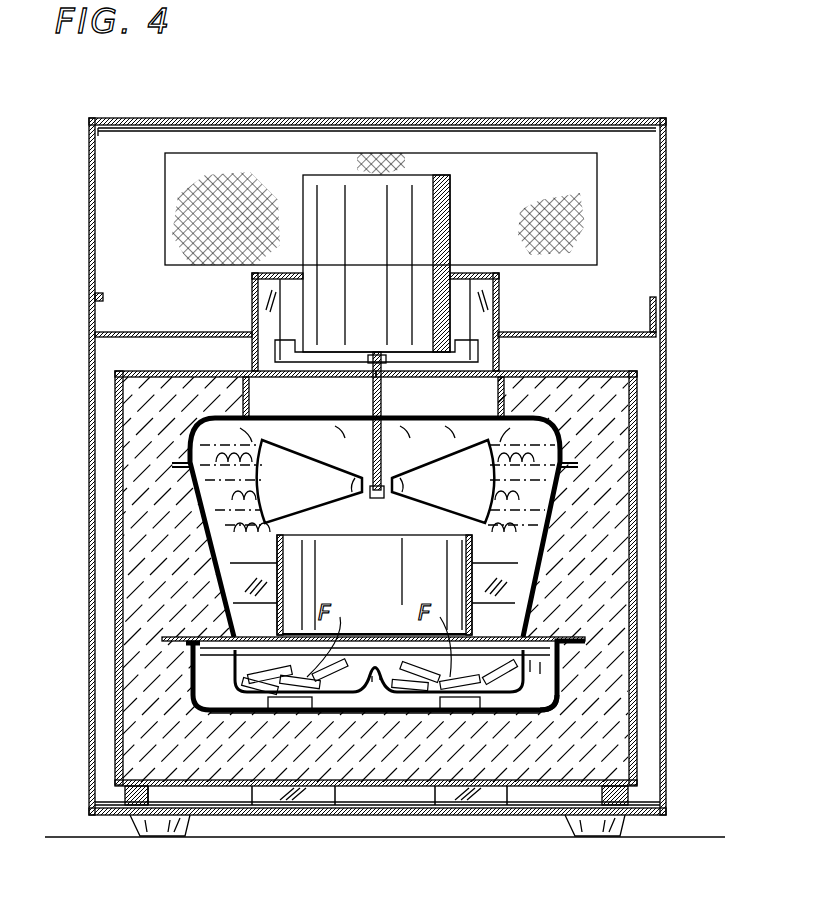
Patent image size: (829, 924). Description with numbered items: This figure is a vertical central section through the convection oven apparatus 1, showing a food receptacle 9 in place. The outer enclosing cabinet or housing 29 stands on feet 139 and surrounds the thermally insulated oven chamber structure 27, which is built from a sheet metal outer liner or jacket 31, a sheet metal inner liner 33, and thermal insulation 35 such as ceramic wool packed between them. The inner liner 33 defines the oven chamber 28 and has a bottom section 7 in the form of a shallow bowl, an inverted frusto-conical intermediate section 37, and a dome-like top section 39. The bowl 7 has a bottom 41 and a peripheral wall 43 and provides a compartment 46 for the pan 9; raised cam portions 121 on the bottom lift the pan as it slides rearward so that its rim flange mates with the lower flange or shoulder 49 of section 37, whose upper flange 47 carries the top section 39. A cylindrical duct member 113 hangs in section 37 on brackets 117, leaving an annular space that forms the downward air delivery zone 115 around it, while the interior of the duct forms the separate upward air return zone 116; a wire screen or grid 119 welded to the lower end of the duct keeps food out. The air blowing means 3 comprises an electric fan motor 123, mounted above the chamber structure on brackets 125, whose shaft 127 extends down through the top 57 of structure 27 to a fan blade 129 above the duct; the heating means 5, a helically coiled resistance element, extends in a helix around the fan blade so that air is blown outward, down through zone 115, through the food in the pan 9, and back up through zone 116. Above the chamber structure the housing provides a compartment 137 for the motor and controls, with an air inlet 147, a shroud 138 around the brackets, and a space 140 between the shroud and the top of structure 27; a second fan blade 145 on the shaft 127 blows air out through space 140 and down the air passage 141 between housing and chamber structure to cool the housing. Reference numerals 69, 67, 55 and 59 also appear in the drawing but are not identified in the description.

The apparatus 1 is at (68, 165).
The outer enclosing cabinet structure 29 is at (668, 118).
The top lid wall 69 is at (450, 118).
The housing side wall 67 is at (663, 277).
The compartment 137 is at (638, 205).
The air inlet 147 is at (563, 180).
The space 140 is at (170, 338).
The shroud 138 is at (608, 325).
The means for blowing air 3 is at (455, 172).
The electric fan motor 123 is at (452, 205).
The brackets 125 is at (247, 272).
The fan blade 145 is at (478, 345).
The thermally insulated oven chamber structure 27 is at (120, 367).
The top 57 is at (640, 378).
The jacket side walls 55 is at (123, 728).
The air passage 141 is at (640, 447).
The top section 39 is at (192, 438).
The intermediate section 37 is at (222, 546).
The inner liner 33 is at (550, 527).
The means for heating the air 5 is at (312, 448).
The upper flange 47 is at (175, 465).
The chamber 28 is at (213, 503).
The second zone 116 is at (407, 548).
The fan blade 129 is at (320, 494).
The shaft 127 is at (383, 497).
The cylindrical duct member 113 is at (357, 502).
The outer liner 31 is at (225, 624).
The annular space 115 is at (493, 550).
The brackets 117 is at (485, 580).
The wire screen 119 is at (392, 634).
The lower flange 49 is at (190, 638).
The peripheral wall 43 is at (200, 690).
The means for holding a receptacle 7 is at (188, 665).
The receptacle 9 is at (538, 680).
The compartment 46 is at (525, 697).
The bottom 41 is at (420, 713).
The raised cam portions 121 is at (318, 710).
The thermal insulation 35 is at (612, 578).
The base plate 59 is at (222, 815).
The feet 139 is at (127, 827).